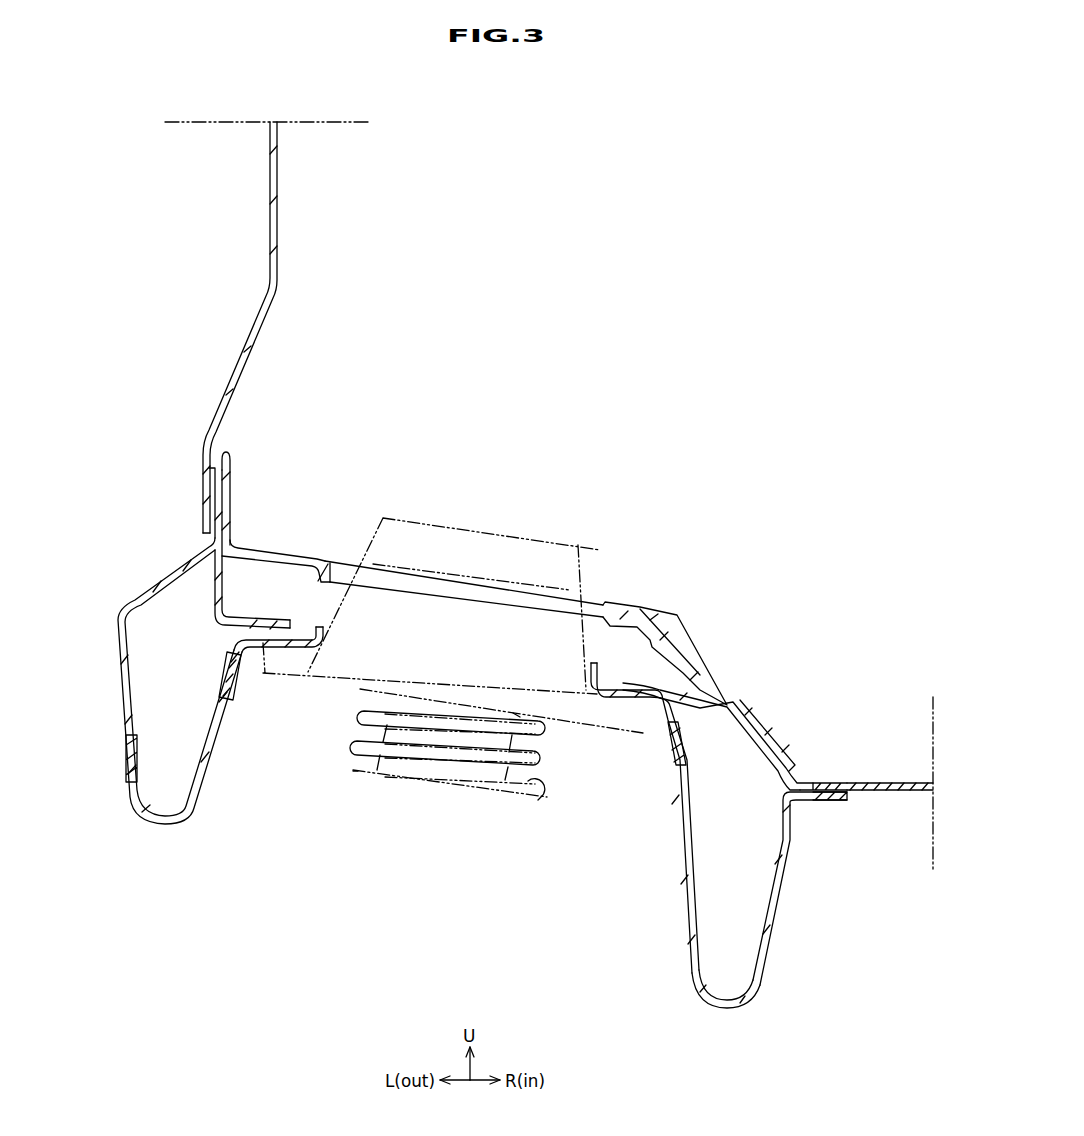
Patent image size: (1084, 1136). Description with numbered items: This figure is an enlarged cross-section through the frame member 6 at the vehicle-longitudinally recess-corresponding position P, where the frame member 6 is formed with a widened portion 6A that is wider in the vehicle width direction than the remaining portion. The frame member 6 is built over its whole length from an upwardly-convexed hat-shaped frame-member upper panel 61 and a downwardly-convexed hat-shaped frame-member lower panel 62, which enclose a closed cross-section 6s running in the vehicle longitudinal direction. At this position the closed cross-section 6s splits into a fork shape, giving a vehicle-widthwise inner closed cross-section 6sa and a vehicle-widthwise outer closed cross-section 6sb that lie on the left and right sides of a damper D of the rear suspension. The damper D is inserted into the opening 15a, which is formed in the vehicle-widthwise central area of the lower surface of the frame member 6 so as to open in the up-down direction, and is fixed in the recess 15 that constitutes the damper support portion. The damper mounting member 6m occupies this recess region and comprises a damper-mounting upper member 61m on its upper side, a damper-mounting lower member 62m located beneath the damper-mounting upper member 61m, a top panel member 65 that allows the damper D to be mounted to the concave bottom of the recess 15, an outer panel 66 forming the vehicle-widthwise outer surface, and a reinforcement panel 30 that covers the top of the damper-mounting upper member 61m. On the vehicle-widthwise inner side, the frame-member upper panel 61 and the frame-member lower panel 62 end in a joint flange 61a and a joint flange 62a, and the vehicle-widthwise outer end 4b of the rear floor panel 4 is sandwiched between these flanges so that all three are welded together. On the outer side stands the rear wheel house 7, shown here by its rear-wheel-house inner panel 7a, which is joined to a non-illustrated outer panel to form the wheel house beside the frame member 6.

The rear wheel house 7 is at (255, 327).
The rear-wheel-house inner panel 7a is at (248, 345).
The vehicle-longitudinally recess-corresponding position P is at (630, 398).
The reinforcement panel 30 is at (680, 612).
The damper D is at (378, 538).
The frame member 6 is at (496, 739).
The closed cross-section 6s is at (408, 712).
The vehicle-widthwise inner closed cross-section 6sa is at (757, 832).
The vehicle-widthwise outer closed cross-section 6sb is at (180, 681).
The widened portion 6A is at (150, 681).
The outer panel 66 is at (121, 689).
The top panel member 65 is at (313, 649).
The frame-member upper panel 61 is at (740, 723).
The damper-mounting upper member 61m is at (731, 703).
The joint flange 61a is at (822, 784).
The rear floor panel 4 is at (873, 784).
The vehicle-widthwise outer end 4b is at (838, 800).
The frame-member lower panel 62 is at (810, 889).
The damper-mounting lower member 62m is at (770, 955).
The joint flange 62a is at (820, 802).
The damper mounting member 6m is at (779, 909).
The recess 15 is at (457, 819).
The opening 15a is at (492, 948).